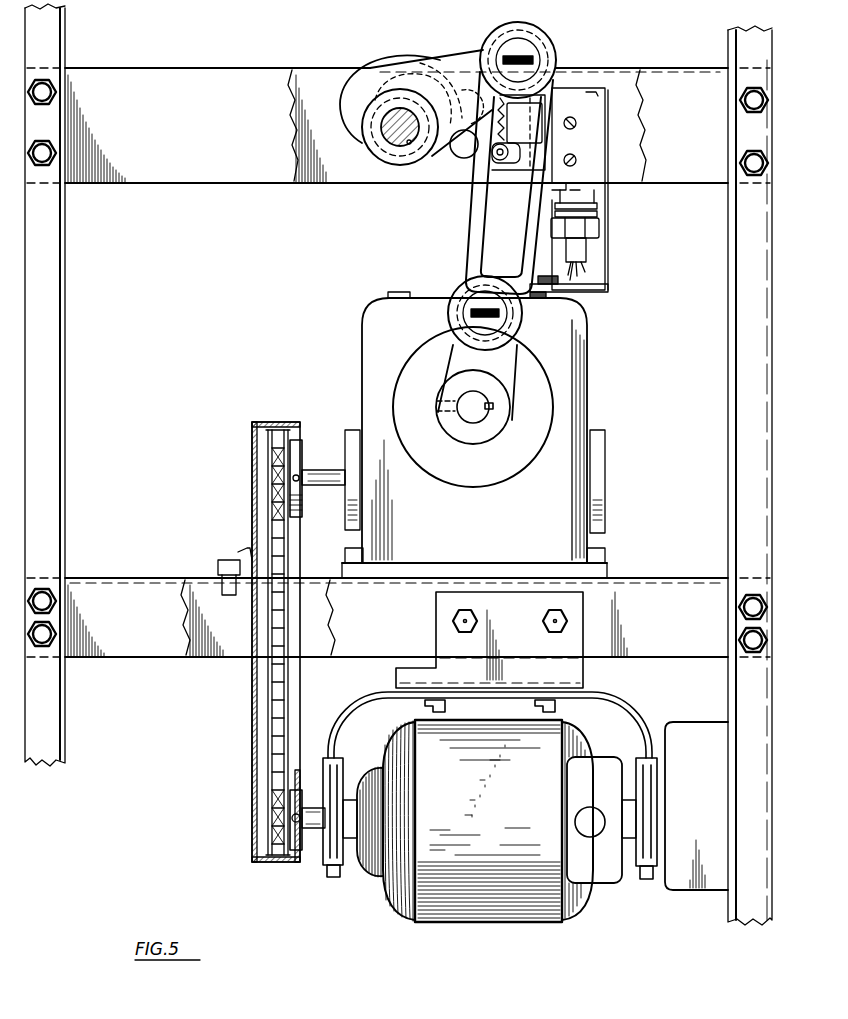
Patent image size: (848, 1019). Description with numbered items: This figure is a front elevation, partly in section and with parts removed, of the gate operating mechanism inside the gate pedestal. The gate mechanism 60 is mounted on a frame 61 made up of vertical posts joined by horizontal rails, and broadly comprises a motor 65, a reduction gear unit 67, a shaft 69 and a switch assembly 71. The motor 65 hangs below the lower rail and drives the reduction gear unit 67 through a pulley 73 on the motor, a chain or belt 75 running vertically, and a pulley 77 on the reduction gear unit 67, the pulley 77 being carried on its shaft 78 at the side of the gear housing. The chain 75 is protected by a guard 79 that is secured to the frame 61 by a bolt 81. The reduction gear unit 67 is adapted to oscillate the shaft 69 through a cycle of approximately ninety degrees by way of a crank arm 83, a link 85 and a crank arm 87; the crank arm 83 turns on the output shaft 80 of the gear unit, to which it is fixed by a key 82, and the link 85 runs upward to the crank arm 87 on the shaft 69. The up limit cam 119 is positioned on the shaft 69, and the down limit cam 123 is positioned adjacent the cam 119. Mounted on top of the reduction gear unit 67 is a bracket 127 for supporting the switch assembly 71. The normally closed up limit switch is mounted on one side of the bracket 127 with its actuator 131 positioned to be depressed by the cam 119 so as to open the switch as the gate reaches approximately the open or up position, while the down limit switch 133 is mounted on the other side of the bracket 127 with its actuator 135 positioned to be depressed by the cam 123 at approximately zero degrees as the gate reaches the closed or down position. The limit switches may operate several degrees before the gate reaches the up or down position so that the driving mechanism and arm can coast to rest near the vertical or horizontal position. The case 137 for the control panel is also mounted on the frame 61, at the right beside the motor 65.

The gate mechanism 60 is at (592, 360).
The frame 61 is at (66, 288).
The motor 65 is at (395, 908).
The reduction gear unit 67 is at (486, 527).
The shaft 69 is at (388, 137).
The switch assembly 71 is at (596, 222).
The pulley 73 is at (297, 800).
The chain or belt 75 is at (288, 694).
The pulley 77 is at (300, 505).
The sprocket shaft 78 is at (322, 470).
The guard 79 is at (254, 443).
The pulley shaft 80 is at (478, 419).
The bolt 81 is at (230, 560).
The key 82 is at (493, 406).
The crank arm 83 is at (458, 372).
The link 85 is at (463, 249).
The crank arm 87 is at (486, 58).
The up limit cam 119 is at (352, 98).
The down limit cam 123 is at (438, 64).
The bracket 127 is at (600, 288).
The actuator 131 is at (456, 160).
The down limit switch 133 is at (597, 153).
The actuator 135 is at (462, 102).
The case 137 is at (692, 720).